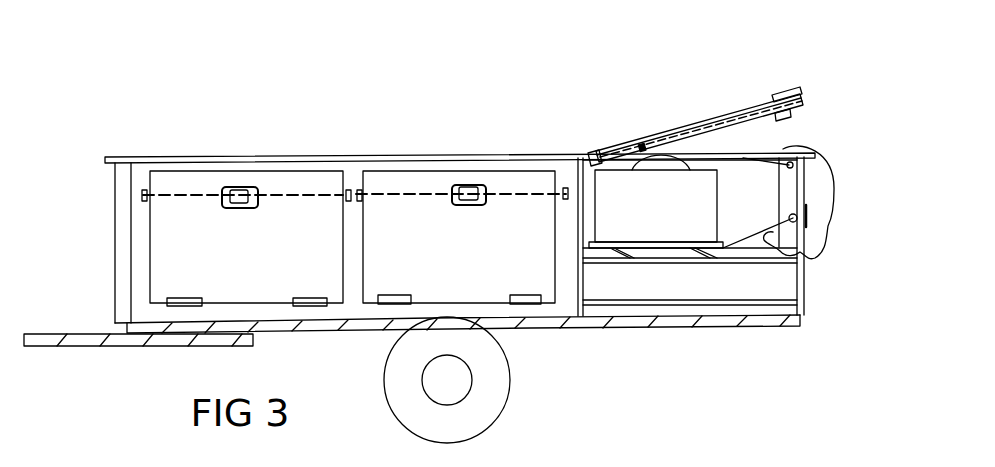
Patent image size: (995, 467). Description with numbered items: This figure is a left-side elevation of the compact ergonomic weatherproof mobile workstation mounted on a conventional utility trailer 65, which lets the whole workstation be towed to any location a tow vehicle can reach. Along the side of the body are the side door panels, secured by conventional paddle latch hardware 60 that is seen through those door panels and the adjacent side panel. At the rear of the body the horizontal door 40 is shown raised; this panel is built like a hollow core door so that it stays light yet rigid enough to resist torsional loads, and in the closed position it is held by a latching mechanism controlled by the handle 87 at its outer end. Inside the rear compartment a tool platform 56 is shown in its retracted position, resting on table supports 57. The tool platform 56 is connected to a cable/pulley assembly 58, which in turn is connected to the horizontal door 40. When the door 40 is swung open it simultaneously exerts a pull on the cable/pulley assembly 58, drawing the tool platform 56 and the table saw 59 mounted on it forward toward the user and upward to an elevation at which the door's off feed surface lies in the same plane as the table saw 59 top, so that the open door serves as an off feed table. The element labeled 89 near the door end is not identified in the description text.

The horizontal door 40 is at (740, 115).
The tool platform 56 is at (688, 247).
The table supports 57 is at (620, 253).
The cable/pulley assembly 58 is at (828, 226).
The table saw 59 is at (606, 183).
The paddle latch hardware 60 is at (403, 194).
The utility trailer 65 is at (97, 338).
The handle 87 is at (780, 100).
The latch 89 is at (783, 117).